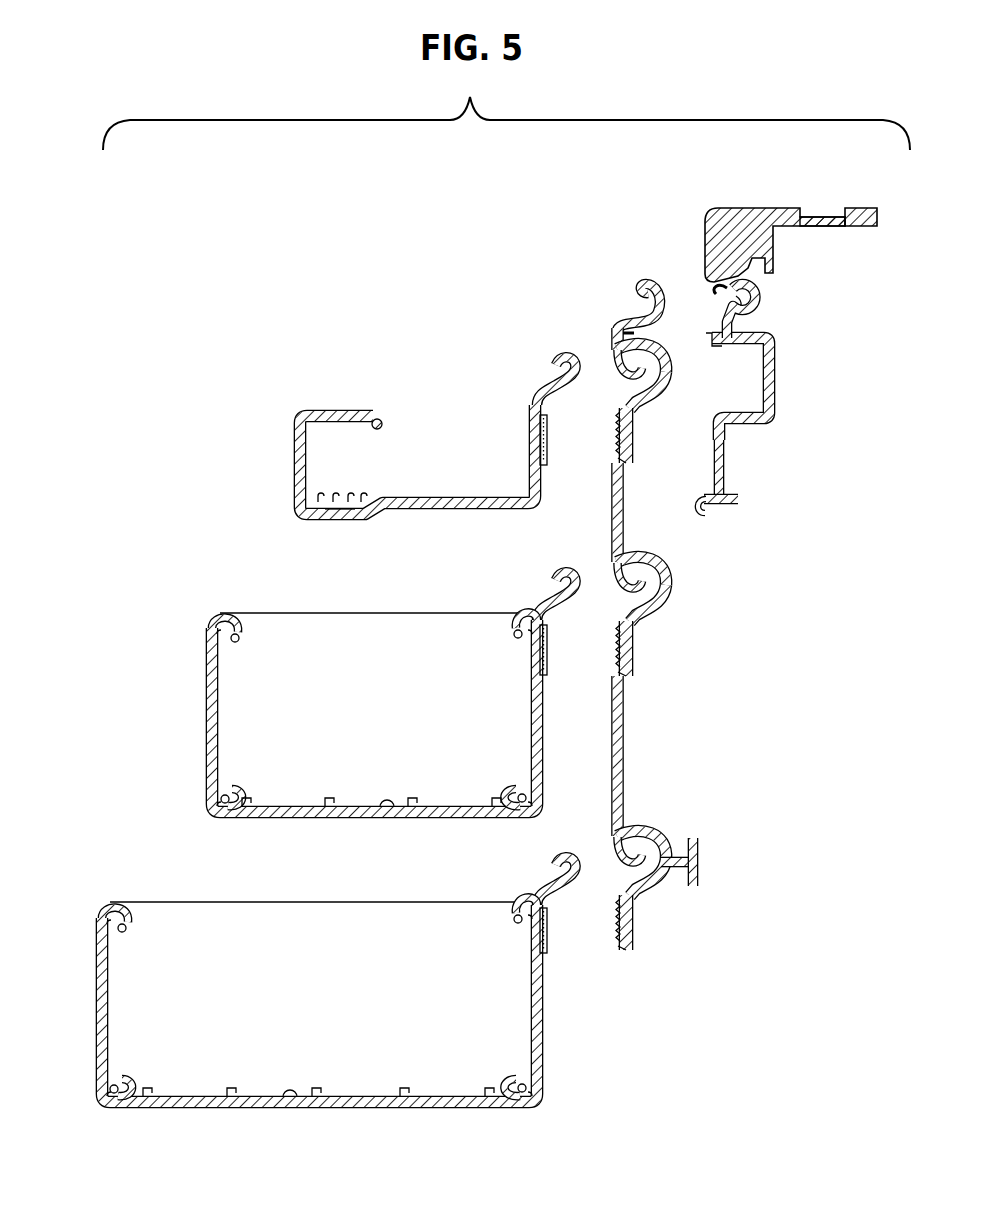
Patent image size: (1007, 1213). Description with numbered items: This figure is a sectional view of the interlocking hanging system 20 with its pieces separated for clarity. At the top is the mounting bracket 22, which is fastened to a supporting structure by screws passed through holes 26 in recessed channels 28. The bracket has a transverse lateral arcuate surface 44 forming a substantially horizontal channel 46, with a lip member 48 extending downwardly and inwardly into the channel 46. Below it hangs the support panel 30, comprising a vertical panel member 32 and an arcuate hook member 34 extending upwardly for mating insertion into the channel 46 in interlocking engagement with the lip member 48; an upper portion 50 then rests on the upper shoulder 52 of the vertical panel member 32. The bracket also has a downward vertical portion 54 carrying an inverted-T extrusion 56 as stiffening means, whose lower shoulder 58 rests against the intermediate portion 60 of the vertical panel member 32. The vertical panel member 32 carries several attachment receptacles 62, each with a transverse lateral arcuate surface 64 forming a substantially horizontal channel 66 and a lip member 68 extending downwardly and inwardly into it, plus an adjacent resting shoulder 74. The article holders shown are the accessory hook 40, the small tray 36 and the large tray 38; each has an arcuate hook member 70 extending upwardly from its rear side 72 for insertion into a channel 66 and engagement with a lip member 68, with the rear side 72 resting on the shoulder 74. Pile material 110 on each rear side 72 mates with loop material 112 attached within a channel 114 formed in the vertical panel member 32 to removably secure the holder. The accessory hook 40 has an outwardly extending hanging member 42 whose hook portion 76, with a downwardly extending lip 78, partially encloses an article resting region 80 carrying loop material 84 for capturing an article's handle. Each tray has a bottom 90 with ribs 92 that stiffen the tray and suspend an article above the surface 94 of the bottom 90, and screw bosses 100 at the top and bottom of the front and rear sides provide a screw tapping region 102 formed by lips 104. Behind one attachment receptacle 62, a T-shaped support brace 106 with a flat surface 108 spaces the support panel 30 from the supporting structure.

The interlocking hanging system 20 is at (288, 236).
The mounting bracket 22 is at (722, 233).
The holes 26 is at (822, 225).
The recessed channels 28 is at (836, 216).
The support panel 30 is at (644, 412).
The vertical panel member 32 is at (625, 719).
The arcuate hook member 34 is at (648, 291).
The small tray 36 is at (208, 726).
The large tray 38 is at (214, 1106).
The accessory hook 40 is at (396, 467).
The outwardly extending hanging member 42 is at (422, 513).
The transverse lateral arcuate surface 44 is at (735, 311).
The substantially horizontal channel 46 is at (734, 306).
The lip member 48 is at (722, 291).
The upper portion 50 is at (626, 335).
The upper shoulder 52 is at (712, 343).
The downward vertical portion 54 is at (727, 456).
The inverted-T extrusion 56 is at (731, 492).
The lower shoulder 58 is at (704, 508).
The intermediate portion 60 is at (625, 496).
The attachment receptacle 62 is at (633, 662).
The transverse lateral arcuate surface 64 is at (661, 375).
The substantially horizontal channel 66 is at (651, 401).
The lip member 68 is at (628, 378).
The arcuate hook member 70 is at (564, 363).
The rear side 72 is at (535, 446).
The resting shoulder 74 is at (623, 694).
The hook portion 76 is at (296, 432).
The downwardly extending lip 78 is at (379, 418).
The article resting region 80 is at (340, 520).
The loop material 84 is at (341, 503).
The bottom 90 is at (338, 816).
The ribs 92 is at (249, 797).
The surface 94 is at (386, 816).
The screw bosses 100 is at (242, 643).
The screw tapping region 102 is at (209, 633).
The lips 104 is at (240, 636).
The support brace 106 is at (699, 860).
The flat surface 108 is at (696, 842).
The pile material 110 is at (548, 448).
The loop material 112 is at (616, 460).
The channel 114 is at (632, 445).